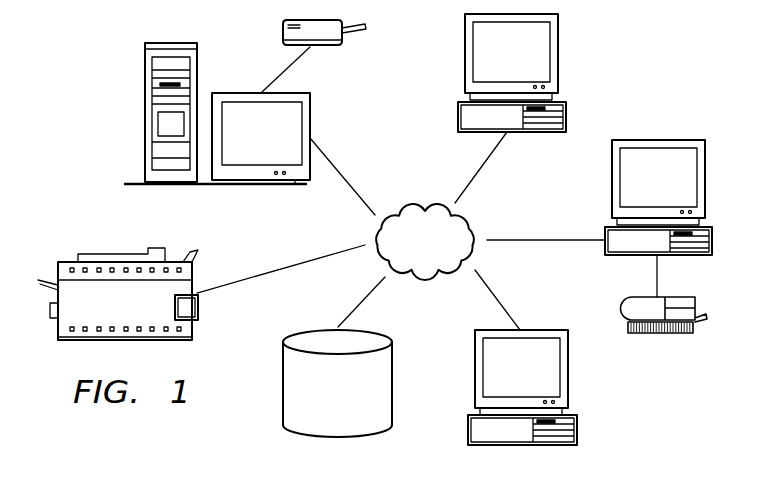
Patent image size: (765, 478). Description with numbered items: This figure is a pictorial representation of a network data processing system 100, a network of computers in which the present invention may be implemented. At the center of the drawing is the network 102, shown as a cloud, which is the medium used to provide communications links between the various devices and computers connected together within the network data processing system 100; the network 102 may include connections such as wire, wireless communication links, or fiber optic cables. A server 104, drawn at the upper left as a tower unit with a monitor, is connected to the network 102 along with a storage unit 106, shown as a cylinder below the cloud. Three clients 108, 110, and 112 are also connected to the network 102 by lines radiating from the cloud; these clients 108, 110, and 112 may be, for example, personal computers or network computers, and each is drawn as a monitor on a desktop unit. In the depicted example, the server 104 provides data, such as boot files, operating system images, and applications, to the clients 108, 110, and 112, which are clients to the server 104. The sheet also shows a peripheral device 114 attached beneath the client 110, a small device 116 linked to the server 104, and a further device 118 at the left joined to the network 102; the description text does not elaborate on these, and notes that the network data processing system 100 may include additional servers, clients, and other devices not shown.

The network data processing system 100 is at (646, 73).
The network 102 is at (441, 252).
The server 104 is at (276, 142).
The storage unit 106 is at (354, 400).
The client 108 is at (528, 62).
The client 110 is at (674, 188).
The client 112 is at (537, 378).
The printer/peripheral device 114 is at (659, 333).
The storage device 116 is at (283, 30).
The electronic device 118 is at (138, 313).